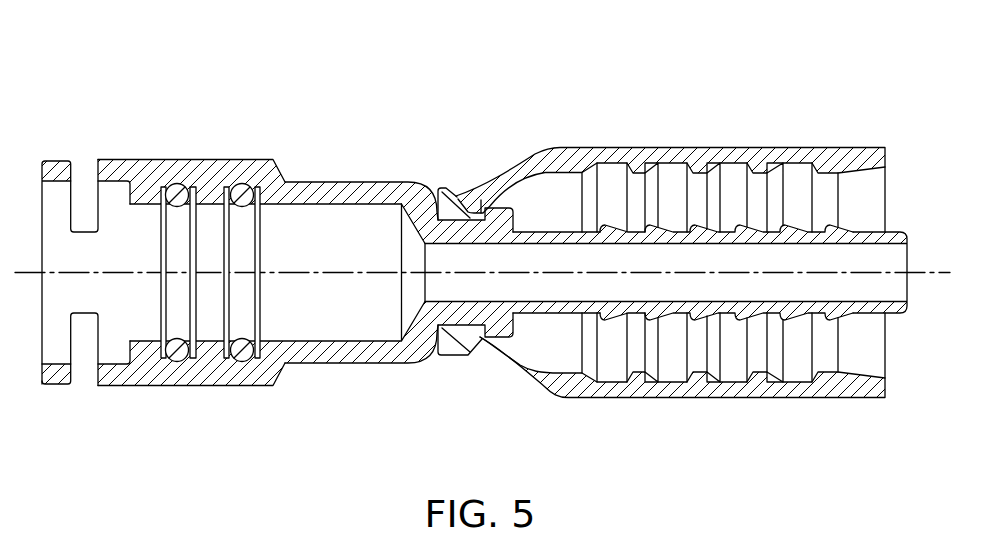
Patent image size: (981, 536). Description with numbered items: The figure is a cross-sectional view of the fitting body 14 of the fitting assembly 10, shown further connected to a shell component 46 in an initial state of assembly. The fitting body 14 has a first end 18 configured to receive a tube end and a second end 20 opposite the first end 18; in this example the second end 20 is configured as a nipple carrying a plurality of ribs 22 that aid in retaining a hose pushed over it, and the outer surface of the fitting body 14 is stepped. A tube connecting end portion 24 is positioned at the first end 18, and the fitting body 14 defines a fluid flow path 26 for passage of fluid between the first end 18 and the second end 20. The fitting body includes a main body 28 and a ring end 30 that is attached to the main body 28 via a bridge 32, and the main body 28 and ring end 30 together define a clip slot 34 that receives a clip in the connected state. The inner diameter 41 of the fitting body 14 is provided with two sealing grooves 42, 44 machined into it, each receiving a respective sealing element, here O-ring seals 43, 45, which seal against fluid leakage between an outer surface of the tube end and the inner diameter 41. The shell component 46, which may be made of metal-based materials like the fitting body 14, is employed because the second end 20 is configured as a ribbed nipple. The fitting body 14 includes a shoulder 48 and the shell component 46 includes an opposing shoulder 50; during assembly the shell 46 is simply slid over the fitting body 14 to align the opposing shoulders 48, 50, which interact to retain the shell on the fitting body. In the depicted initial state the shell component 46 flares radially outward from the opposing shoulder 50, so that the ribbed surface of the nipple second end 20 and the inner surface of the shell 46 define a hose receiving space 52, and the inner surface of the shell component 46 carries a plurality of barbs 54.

The fitting assembly 10 is at (315, 89).
The fitting body 14 is at (368, 182).
The first end 18 is at (45, 160).
The second end 20 is at (892, 232).
The ribs 22 is at (700, 360).
The tube connecting end portion 24 is at (133, 390).
The fluid flow path 26 is at (359, 326).
The main body 28 is at (203, 160).
The ring end 30 is at (50, 385).
The bridge 32 is at (82, 258).
The clip slot 34 is at (83, 352).
The inner diameter 41 is at (300, 206).
The sealing groove 42 is at (175, 355).
The O-ring seal 43 is at (178, 190).
The sealing groove 44 is at (240, 355).
The O-ring seal 45 is at (242, 190).
The shell component 46 is at (655, 147).
The shoulder 48 is at (472, 202).
The opposing shoulder 50 is at (480, 340).
The hose receiving space 52 is at (652, 211).
The barbs 54 is at (746, 147).